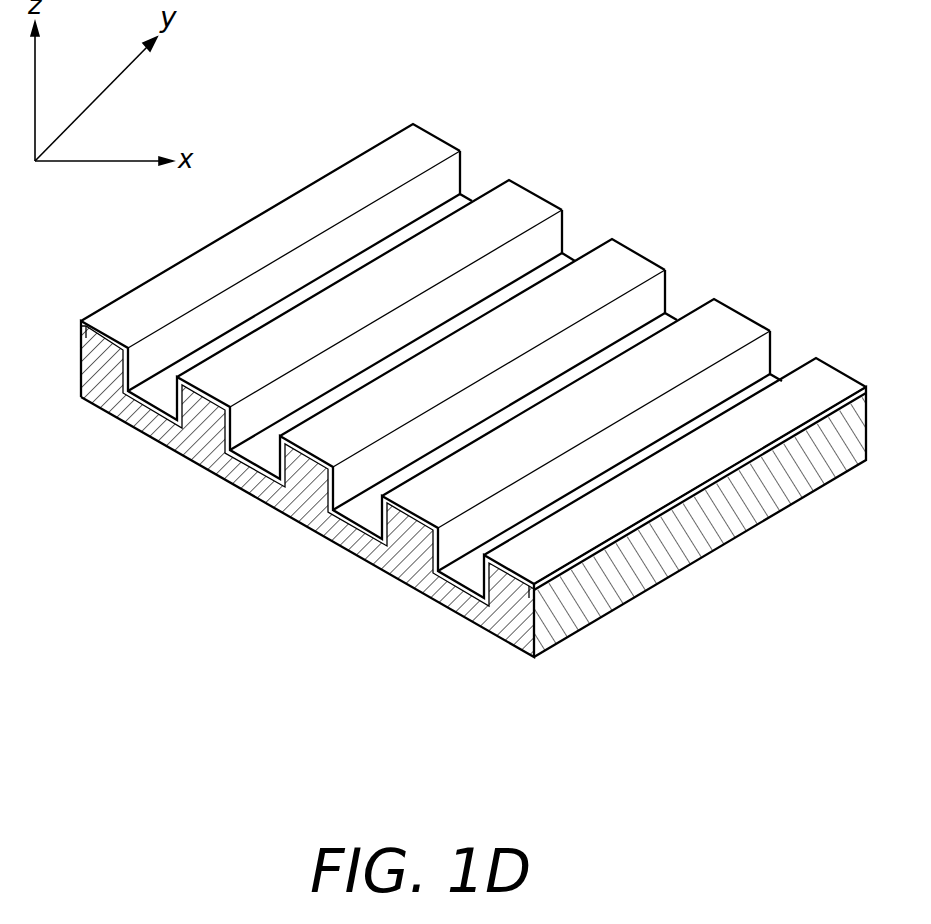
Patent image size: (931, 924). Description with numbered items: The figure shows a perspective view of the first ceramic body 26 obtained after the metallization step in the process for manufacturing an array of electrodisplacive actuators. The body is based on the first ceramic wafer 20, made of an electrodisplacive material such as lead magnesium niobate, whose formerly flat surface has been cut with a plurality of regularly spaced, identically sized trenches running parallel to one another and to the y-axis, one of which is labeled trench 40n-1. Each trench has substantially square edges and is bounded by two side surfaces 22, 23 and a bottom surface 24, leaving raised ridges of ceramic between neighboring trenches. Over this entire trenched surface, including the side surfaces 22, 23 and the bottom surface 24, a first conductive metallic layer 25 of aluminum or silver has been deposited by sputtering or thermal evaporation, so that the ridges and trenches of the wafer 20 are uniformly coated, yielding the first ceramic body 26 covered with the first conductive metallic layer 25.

The first ceramic wafer 20 is at (453, 598).
The side surface 22 is at (115, 383).
The side surface 23 is at (190, 418).
The bottom surface 24 is at (148, 418).
The first conductive metallic layer 25 is at (705, 463).
The first ceramic body 26 is at (674, 207).
The trench 40n-1 is at (360, 510).